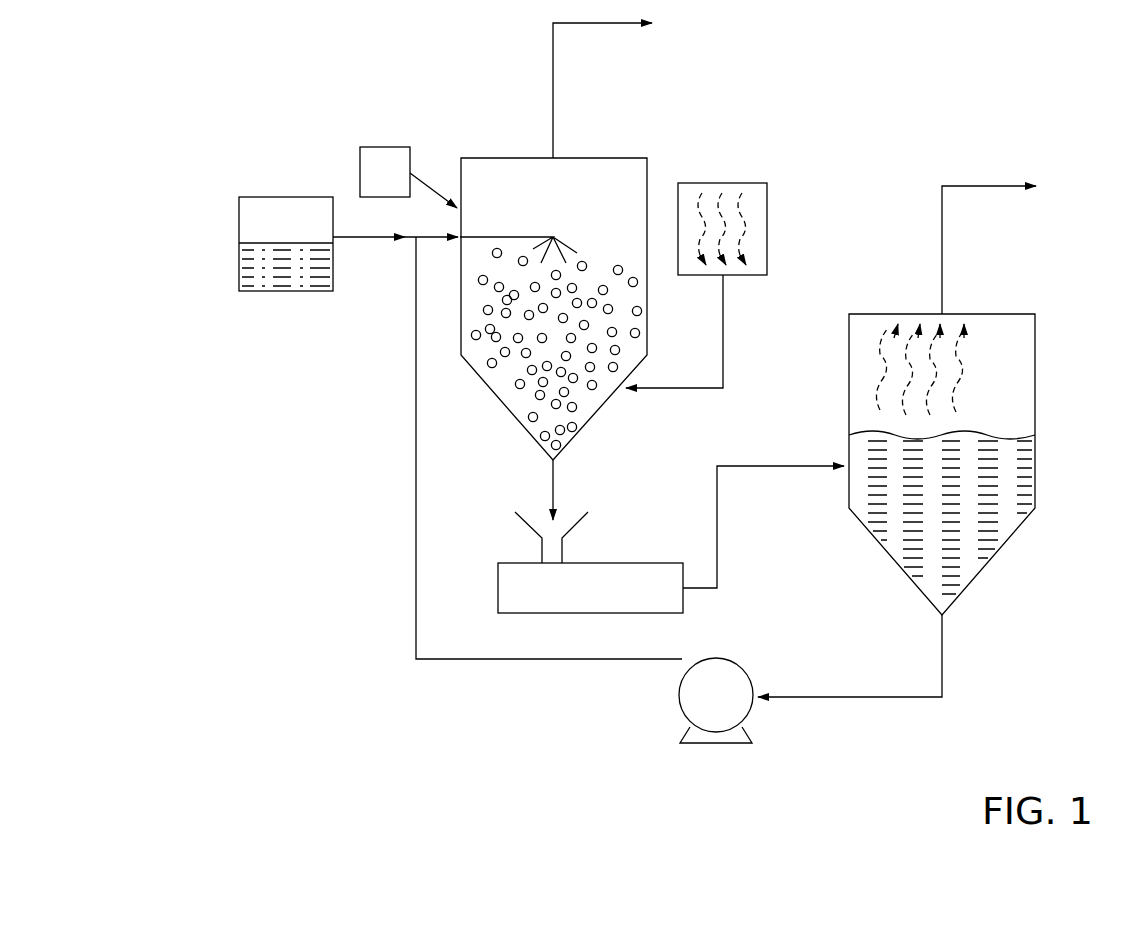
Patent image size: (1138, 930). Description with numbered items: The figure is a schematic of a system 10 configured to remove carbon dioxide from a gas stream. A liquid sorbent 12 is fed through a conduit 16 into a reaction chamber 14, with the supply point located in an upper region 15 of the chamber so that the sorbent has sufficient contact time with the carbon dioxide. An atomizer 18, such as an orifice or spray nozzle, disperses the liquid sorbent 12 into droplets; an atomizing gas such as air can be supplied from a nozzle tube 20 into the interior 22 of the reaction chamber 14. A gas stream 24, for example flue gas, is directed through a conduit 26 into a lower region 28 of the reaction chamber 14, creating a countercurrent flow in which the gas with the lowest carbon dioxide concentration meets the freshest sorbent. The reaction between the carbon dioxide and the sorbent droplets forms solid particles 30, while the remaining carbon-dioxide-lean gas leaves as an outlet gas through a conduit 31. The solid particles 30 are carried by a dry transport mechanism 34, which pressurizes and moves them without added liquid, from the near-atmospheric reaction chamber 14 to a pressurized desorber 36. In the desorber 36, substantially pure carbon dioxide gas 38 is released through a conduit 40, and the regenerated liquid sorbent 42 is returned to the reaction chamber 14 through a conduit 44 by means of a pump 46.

The system 10 is at (804, 68).
The liquid sorbent 12 is at (290, 197).
The reaction chamber 14 is at (650, 167).
The upper region 15 is at (590, 175).
The conduit 16 is at (372, 245).
The atomizer 18 is at (373, 147).
The nozzle tube 20 is at (435, 184).
The interior 22 is at (480, 166).
The gas stream 24 is at (767, 218).
The conduit 26 is at (723, 328).
The lower region 28 is at (502, 372).
The solid particles 30 is at (615, 350).
The conduit 31 is at (553, 58).
The dry transport mechanism 34 is at (498, 587).
The desorber 36 is at (1035, 324).
The CO2 gas 38 is at (1012, 380).
The conduit 40 is at (942, 254).
The liquid sorbent 42 is at (1022, 480).
The conduit 44 is at (942, 652).
The pump 46 is at (679, 695).